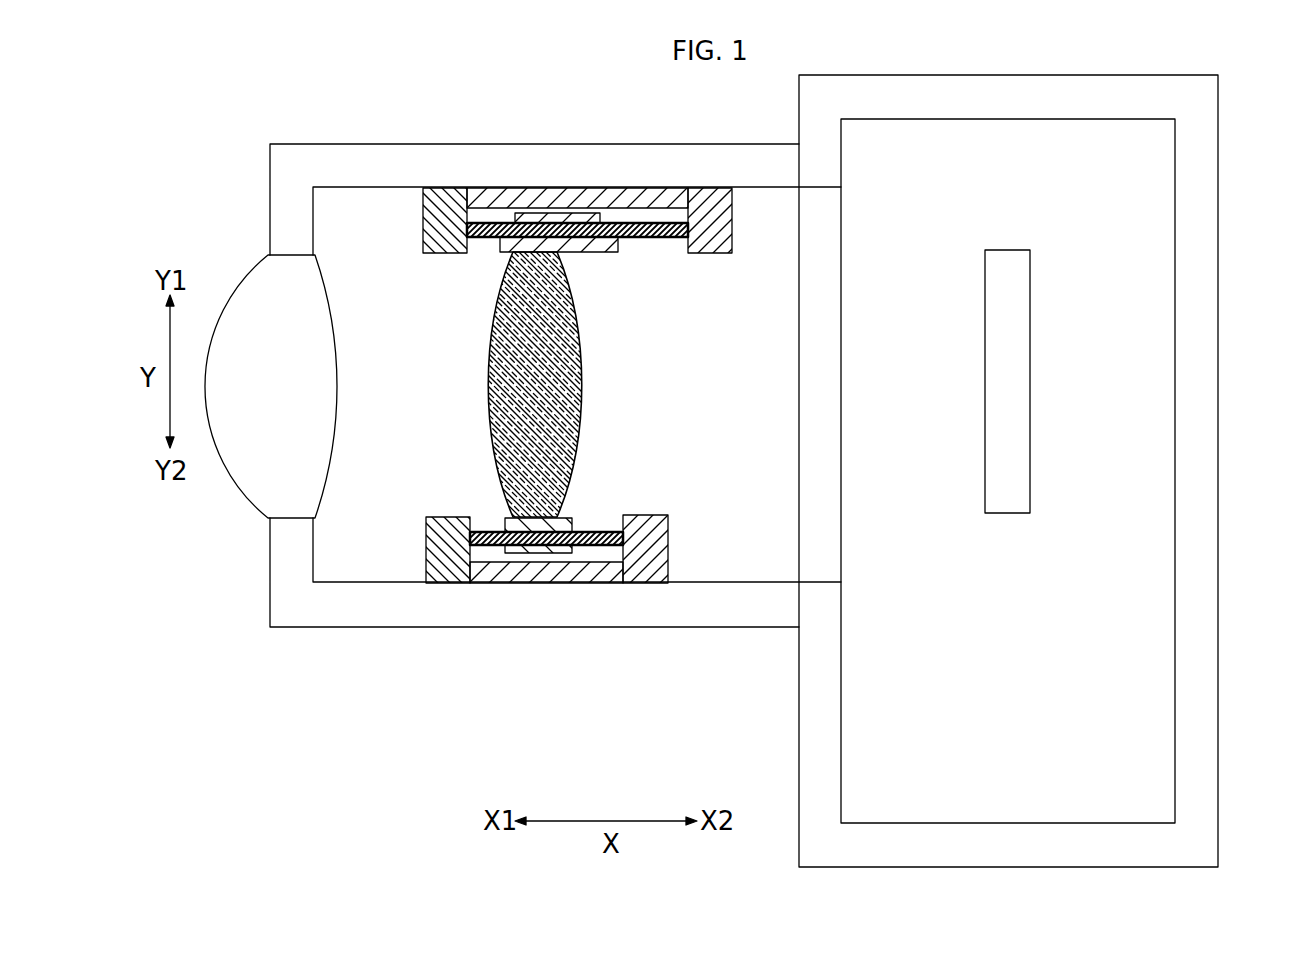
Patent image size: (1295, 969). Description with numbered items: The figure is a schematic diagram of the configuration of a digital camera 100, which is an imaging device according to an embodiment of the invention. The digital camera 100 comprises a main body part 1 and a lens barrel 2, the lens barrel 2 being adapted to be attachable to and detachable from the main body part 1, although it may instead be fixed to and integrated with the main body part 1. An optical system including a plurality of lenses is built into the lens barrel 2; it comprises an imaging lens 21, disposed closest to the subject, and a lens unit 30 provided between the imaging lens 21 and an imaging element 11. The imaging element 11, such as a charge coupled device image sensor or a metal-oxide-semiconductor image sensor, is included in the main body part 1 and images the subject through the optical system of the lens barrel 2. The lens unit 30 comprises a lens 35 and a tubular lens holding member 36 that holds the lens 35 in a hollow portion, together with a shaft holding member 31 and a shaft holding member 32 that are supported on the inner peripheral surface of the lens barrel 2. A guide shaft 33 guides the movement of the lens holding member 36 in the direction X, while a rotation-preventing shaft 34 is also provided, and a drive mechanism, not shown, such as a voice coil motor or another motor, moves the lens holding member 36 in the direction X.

The main body part 1 is at (818, 657).
The lens barrel 2 is at (350, 615).
The imaging element 11 is at (1020, 478).
The imaging lens 21 is at (252, 492).
The lens unit 30 is at (403, 221).
The shaft holding member 31 is at (450, 190).
The shaft holding member 32 is at (717, 190).
The guide shaft 33 is at (657, 220).
The rotation-preventing shaft 34 is at (588, 540).
The lens 35 is at (577, 323).
The lens holding member 36 is at (540, 215).
The digital camera 100 is at (400, 759).